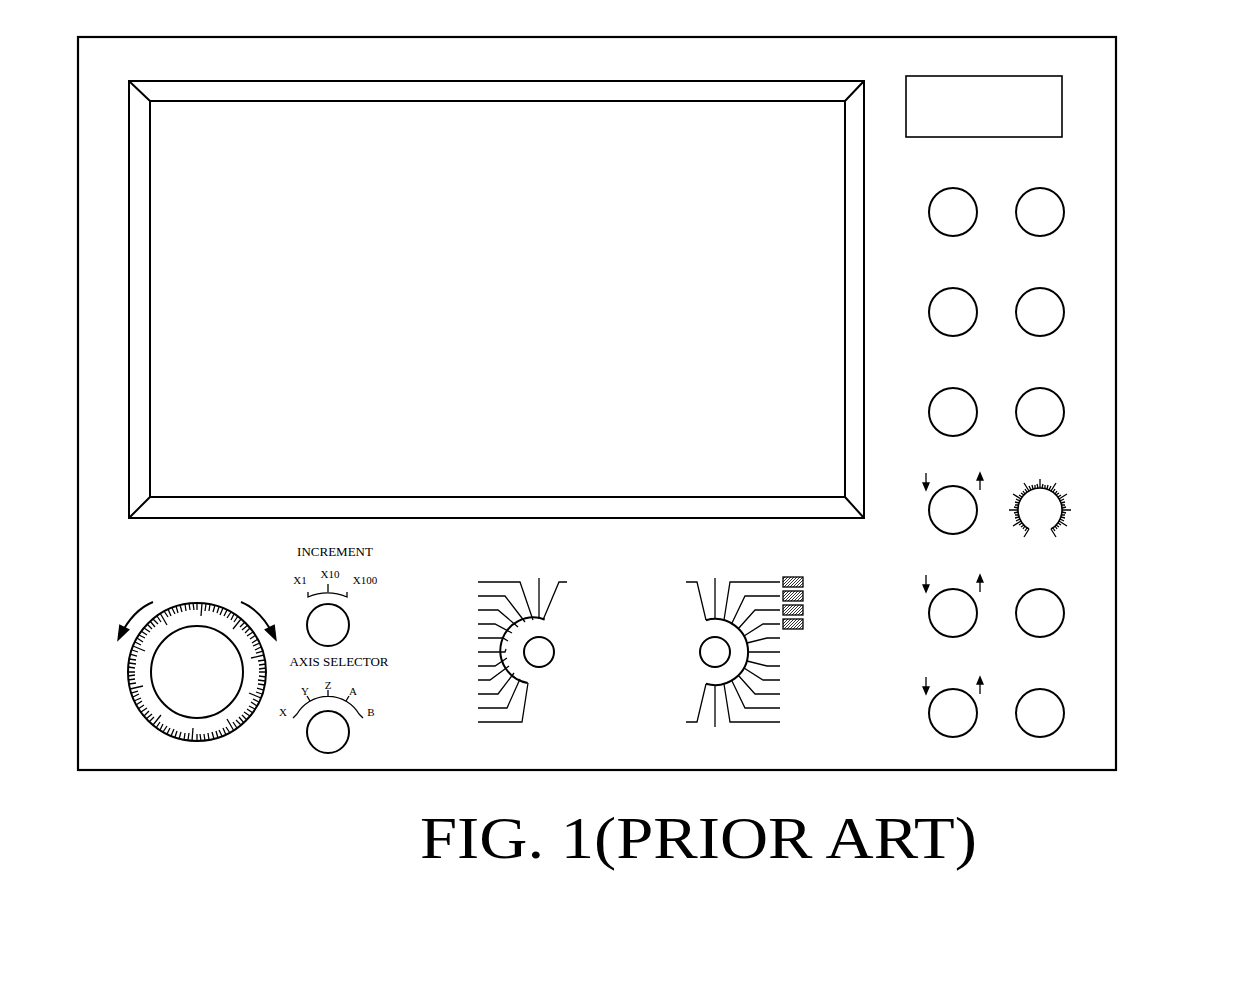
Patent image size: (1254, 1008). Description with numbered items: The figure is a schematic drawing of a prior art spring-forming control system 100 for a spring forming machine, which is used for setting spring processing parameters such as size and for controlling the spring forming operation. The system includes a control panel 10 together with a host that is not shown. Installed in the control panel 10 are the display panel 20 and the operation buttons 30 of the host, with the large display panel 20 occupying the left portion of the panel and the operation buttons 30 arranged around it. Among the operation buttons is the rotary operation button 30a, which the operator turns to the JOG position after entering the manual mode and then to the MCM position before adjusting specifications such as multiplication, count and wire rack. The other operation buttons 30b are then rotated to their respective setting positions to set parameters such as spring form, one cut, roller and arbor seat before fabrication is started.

The spring-forming control system 100 is at (1140, 105).
The control panel 10 is at (1095, 315).
The display panel 20 is at (823, 257).
The operation buttons 30 is at (210, 740).
The operation button 30a is at (545, 657).
The operation buttons 30b is at (699, 652).